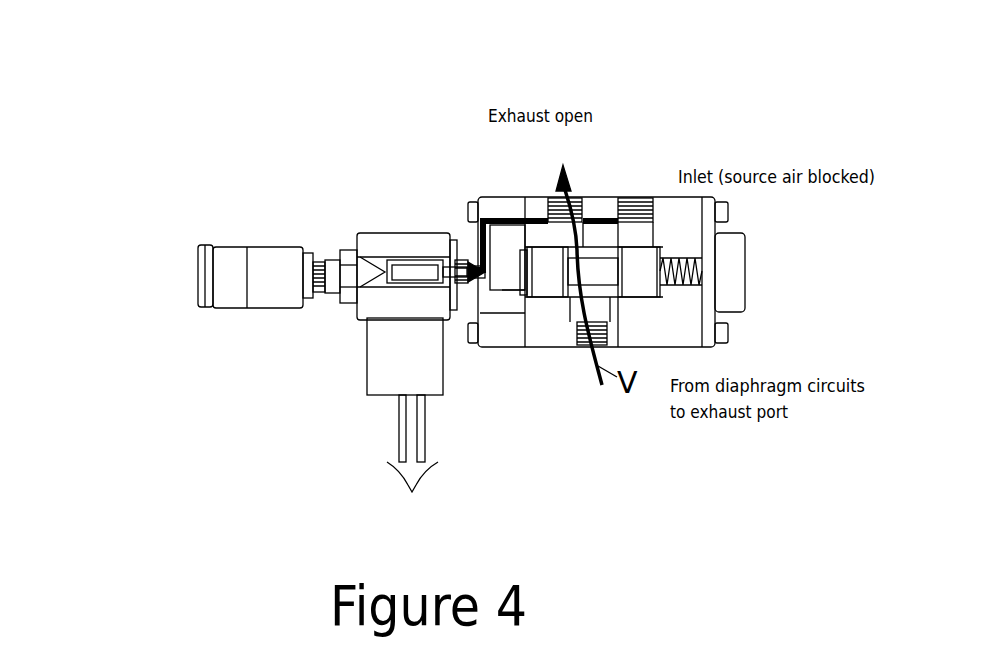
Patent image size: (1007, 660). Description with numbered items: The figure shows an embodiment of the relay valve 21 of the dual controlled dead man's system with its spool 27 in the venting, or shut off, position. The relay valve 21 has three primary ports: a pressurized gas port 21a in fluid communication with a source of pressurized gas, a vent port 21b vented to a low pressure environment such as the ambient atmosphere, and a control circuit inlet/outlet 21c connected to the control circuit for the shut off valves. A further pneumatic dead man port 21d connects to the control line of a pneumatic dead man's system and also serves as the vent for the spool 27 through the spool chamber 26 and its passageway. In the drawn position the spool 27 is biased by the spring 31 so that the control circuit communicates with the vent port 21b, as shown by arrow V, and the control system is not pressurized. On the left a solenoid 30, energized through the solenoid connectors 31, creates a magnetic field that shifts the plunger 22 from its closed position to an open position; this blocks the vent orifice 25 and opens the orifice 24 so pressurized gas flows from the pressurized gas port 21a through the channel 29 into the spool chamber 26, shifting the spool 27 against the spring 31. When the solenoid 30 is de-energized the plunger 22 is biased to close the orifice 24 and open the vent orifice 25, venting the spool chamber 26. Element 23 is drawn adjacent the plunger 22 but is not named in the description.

The relay valve 21 is at (255, 115).
The pressurized gas port 21a is at (645, 192).
The vent port 21b is at (576, 192).
The control circuit inlet/outlet 21c is at (580, 354).
The pneumatic dead man port 21d is at (178, 274).
The plunger 22 is at (410, 273).
The valve stem 23 is at (458, 258).
The orifice 24 is at (486, 285).
The vent orifice 25 is at (392, 243).
The spool chamber 26 is at (482, 276).
The spool 27 is at (640, 273).
The channel 29 is at (482, 220).
The solenoid 30 is at (378, 363).
The spring 31 is at (700, 255).